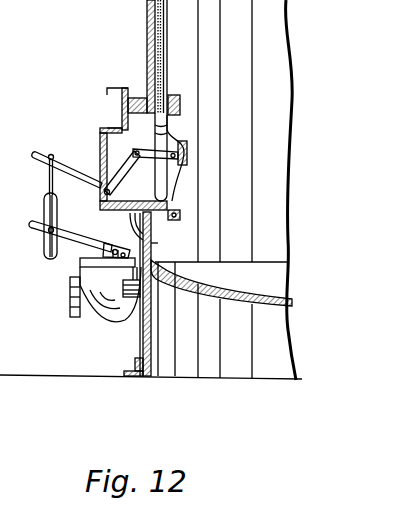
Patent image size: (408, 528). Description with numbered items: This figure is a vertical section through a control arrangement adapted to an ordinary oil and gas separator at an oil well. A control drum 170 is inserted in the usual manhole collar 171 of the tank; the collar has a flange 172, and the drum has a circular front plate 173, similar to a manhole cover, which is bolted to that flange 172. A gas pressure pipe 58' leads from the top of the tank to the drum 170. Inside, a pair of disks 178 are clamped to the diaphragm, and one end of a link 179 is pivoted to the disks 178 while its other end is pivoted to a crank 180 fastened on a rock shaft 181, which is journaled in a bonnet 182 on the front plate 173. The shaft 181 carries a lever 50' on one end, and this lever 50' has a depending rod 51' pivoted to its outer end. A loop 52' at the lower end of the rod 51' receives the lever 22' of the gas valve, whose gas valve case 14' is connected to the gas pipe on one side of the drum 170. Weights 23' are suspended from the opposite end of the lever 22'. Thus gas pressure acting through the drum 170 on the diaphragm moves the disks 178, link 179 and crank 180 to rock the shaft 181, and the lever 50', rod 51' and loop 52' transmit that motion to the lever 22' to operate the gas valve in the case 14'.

The gas pressure pipe 58' is at (175, 56).
The flange 172 is at (128, 87).
The circular front plate 173 is at (121, 106).
The bonnet 182 is at (100, 134).
The disks 178 is at (189, 152).
The link 179 is at (150, 161).
The crank 180 is at (100, 164).
The lever 50' is at (50, 148).
The depending rod 51' is at (33, 209).
The lever of the gas valve 22' is at (79, 239).
The loop 52' is at (33, 242).
The rock shaft 181 is at (100, 204).
The gas valve case 14' is at (86, 286).
The weights 23' is at (221, 286).
The control drum 170 is at (160, 221).
The manhole collar 171 is at (155, 243).